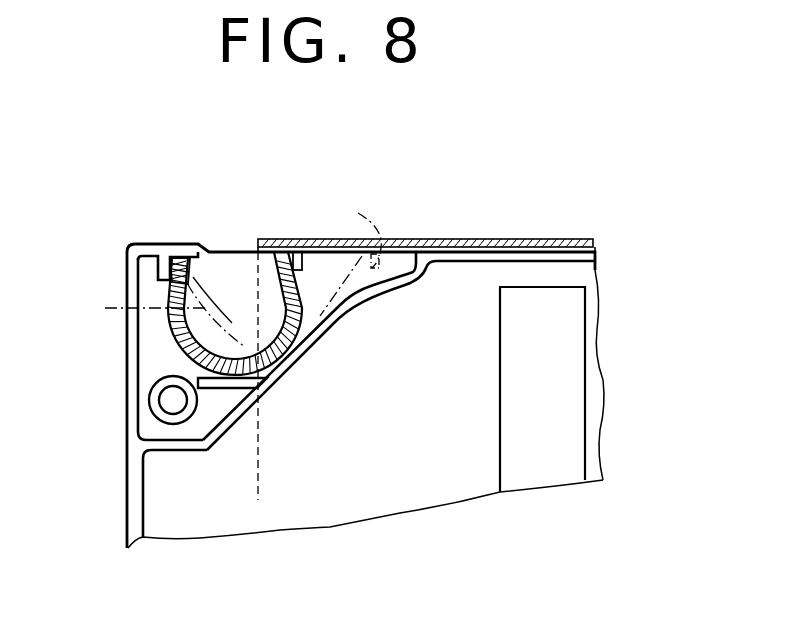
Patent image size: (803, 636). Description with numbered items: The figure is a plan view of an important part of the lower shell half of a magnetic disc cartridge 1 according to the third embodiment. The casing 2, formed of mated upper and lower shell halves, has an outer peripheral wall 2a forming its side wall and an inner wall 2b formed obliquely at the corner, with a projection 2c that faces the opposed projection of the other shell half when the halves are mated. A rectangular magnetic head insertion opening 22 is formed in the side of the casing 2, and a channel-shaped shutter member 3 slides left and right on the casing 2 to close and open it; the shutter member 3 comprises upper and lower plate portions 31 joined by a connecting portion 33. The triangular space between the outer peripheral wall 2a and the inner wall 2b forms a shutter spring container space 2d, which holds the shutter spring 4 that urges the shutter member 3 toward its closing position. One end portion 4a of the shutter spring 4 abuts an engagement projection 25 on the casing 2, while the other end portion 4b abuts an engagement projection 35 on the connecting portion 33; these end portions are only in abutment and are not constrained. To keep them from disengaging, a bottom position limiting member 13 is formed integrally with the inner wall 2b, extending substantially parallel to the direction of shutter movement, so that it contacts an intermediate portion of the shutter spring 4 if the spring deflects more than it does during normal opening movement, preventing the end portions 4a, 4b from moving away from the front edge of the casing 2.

The magnetic disc cartridge 1 is at (546, 187).
The casing 2 is at (118, 494).
The outer peripheral wall 2a is at (127, 443).
The inner wall 2b is at (330, 328).
The projection 2c is at (150, 400).
The shutter spring container space 2d is at (237, 270).
The shutter member 3 is at (556, 230).
The shutter spring 4 is at (170, 340).
The end portion of shutter spring 4a is at (195, 257).
The end portion of shutter spring 4b is at (284, 250).
The bottom position limiting member 13 is at (220, 392).
The magnetic head insertion opening 22 is at (570, 373).
The engagement projection 25 is at (165, 262).
The plate portion 31 is at (258, 500).
The connecting portion 33 is at (440, 238).
The engagement projection 35 is at (300, 312).